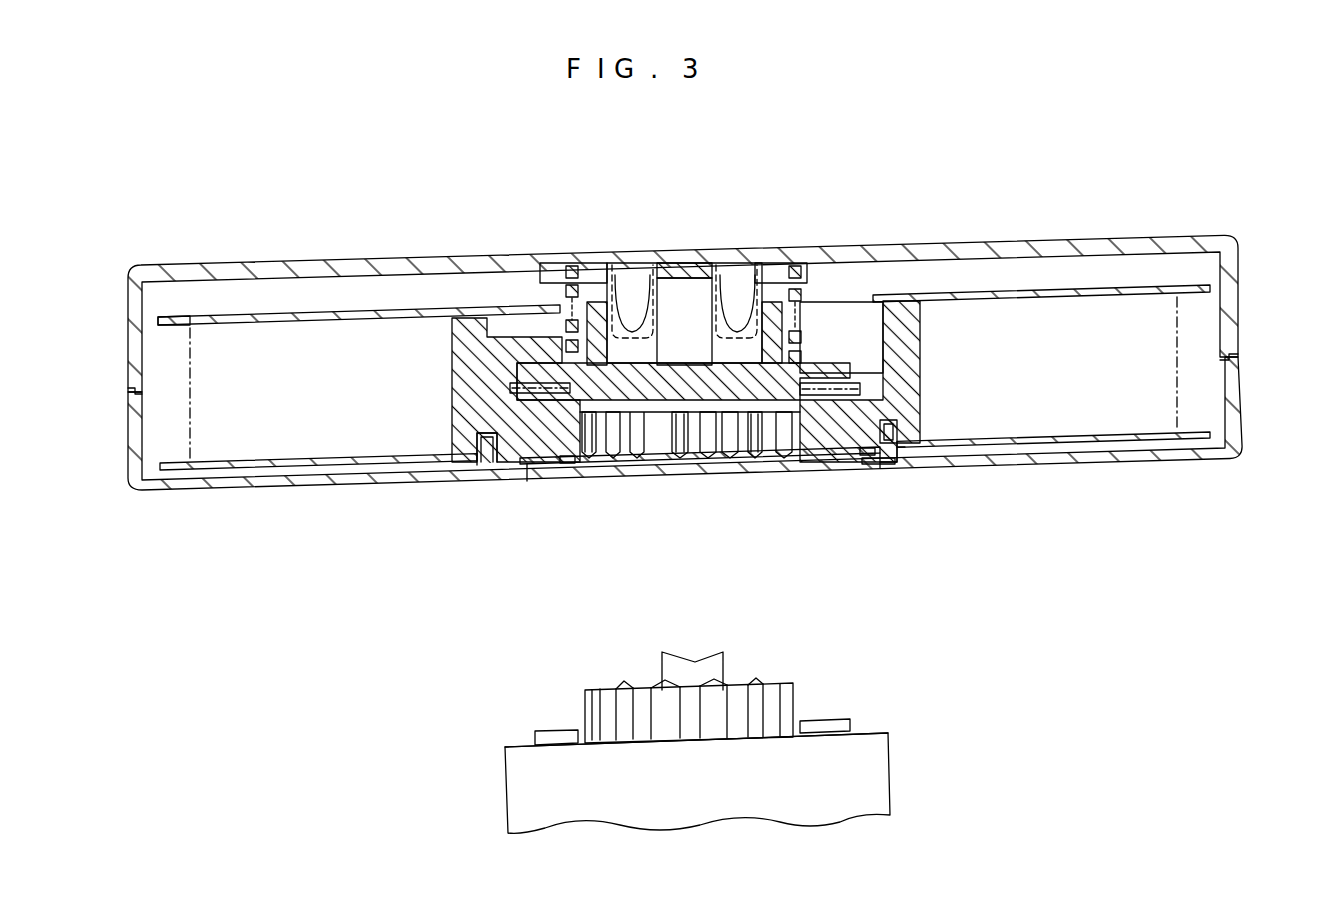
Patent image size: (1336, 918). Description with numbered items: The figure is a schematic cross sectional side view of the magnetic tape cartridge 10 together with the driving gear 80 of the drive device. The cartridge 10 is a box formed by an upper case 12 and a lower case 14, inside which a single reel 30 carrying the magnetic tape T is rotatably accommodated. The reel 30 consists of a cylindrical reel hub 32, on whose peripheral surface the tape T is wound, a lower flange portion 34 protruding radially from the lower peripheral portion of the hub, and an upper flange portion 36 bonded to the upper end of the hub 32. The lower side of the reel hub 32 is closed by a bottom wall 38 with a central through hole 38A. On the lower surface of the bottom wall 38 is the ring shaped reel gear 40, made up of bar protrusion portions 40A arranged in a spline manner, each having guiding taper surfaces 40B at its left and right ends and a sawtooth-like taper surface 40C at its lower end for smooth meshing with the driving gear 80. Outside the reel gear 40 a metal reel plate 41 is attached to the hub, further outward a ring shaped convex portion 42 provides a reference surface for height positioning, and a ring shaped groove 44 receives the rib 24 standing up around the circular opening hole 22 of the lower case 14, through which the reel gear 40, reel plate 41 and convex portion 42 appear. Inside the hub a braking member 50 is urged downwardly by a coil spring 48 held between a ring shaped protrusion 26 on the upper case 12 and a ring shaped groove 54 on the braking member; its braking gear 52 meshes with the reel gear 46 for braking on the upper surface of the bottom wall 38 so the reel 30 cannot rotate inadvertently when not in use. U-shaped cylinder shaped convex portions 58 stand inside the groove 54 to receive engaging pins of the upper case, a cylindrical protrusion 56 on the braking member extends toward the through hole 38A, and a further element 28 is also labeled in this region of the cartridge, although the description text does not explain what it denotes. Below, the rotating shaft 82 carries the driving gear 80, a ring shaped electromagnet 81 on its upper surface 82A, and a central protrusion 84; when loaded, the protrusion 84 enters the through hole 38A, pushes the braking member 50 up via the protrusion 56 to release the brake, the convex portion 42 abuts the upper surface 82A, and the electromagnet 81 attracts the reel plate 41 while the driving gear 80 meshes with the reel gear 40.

The magnetic tape cartridge 10 is at (716, 296).
The upper case 12 is at (1213, 225).
The lower case 14 is at (1246, 457).
The opening hole 22 is at (498, 481).
The rib 24 is at (897, 432).
The ring shaped protrusion 26 is at (812, 300).
The rotor hub 28 is at (650, 338).
The reel 30 is at (258, 313).
The reel hub 32 is at (455, 390).
The lower flange portion 34 is at (170, 463).
The upper flange portion 36 is at (140, 318).
The bottom wall 38 is at (557, 470).
The through hole 38A is at (752, 472).
The reel gear 40 is at (650, 478).
The bar protrusion portion 40A is at (713, 480).
The taper surface 40B is at (783, 477).
The taper surface 40C is at (603, 478).
The reel plate 41 is at (567, 482).
The convex portion 42 is at (878, 482).
The ring shaped groove 44 is at (876, 470).
The reel gear for braking 46 is at (862, 385).
The coil spring 48 is at (765, 300).
The braking member 50 is at (838, 348).
The braking gear 52 is at (545, 358).
The ring shaped groove 54 is at (536, 300).
The protrusion 56 is at (683, 470).
The cylinder shaped convex portion 58 is at (722, 340).
The magnetic tape T is at (1098, 345).
The driving gear 80 is at (795, 690).
The electromagnet 81 is at (555, 730).
The rotating shaft 82 is at (872, 752).
The upper surface 82A is at (866, 734).
The protrusion 84 is at (718, 665).